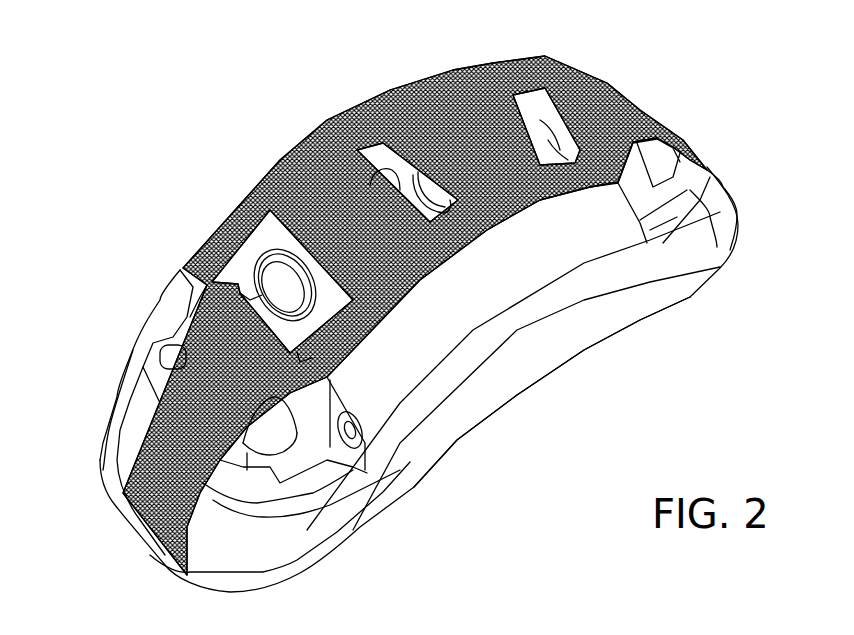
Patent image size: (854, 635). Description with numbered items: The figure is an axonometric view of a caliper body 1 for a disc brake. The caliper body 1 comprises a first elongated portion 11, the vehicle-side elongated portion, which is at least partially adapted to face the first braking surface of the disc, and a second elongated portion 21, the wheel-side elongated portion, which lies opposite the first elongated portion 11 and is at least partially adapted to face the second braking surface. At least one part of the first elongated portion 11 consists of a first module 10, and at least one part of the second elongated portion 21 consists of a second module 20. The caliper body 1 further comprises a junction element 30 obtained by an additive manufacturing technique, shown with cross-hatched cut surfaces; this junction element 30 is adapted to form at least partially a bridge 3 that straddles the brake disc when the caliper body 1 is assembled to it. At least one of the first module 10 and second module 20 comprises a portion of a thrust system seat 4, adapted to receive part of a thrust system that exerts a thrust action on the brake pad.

The caliper body 1 is at (134, 184).
The bridge 3 is at (300, 152).
The thrust system seat 4 is at (277, 283).
The first module 10 is at (167, 320).
The first elongated portion 11 is at (143, 350).
The second module 20 is at (583, 323).
The second elongated portion 21 is at (490, 400).
The junction element 30 is at (390, 97).